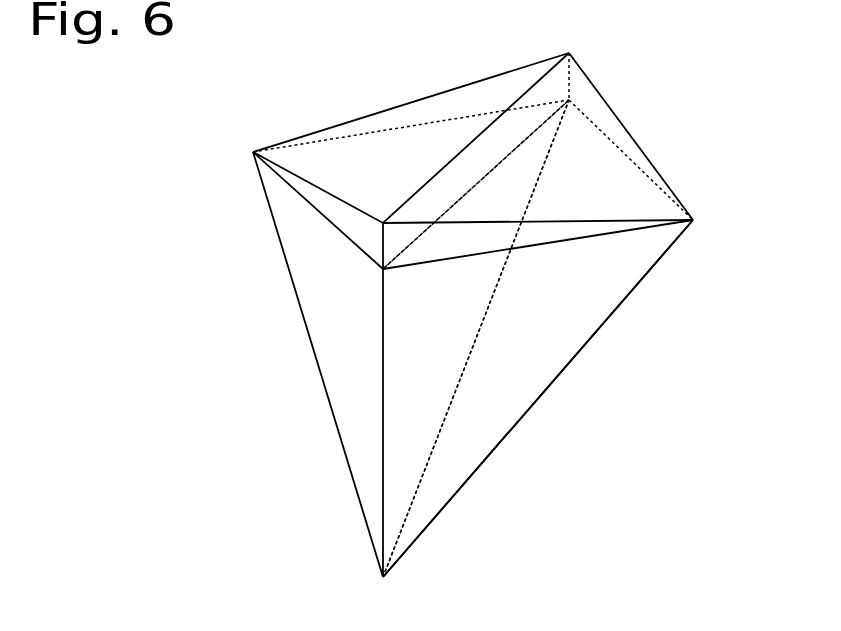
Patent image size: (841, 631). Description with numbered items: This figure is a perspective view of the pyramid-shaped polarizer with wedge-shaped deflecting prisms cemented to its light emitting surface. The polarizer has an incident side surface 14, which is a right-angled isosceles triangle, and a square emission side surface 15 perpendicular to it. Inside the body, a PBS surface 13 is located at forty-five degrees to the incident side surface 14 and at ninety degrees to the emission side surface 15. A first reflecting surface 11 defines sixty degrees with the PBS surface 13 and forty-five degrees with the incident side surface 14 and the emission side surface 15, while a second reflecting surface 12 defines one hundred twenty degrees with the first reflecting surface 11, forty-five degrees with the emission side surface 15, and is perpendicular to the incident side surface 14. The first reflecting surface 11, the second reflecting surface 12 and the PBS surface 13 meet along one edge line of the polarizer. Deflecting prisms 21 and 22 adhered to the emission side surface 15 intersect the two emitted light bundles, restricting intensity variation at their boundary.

The first reflecting surface 11 is at (307, 252).
The second reflecting surface 12 is at (640, 266).
The PBS surface 13 is at (410, 397).
The incident side surface 14 is at (527, 363).
The emission side surface 15 is at (573, 175).
The deflecting prism 21 is at (426, 100).
The deflecting prism 22 is at (585, 87).